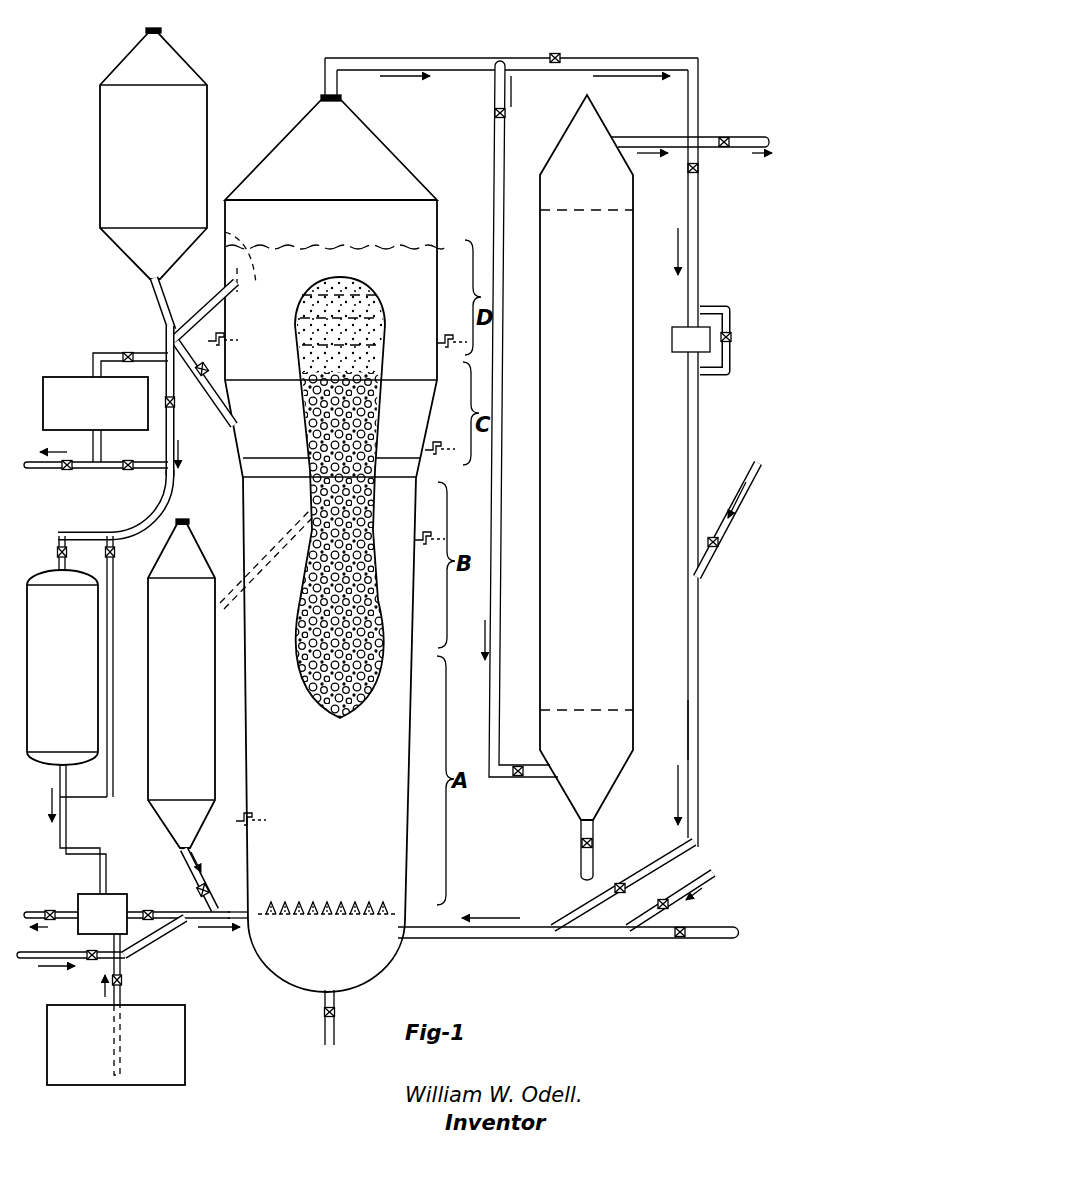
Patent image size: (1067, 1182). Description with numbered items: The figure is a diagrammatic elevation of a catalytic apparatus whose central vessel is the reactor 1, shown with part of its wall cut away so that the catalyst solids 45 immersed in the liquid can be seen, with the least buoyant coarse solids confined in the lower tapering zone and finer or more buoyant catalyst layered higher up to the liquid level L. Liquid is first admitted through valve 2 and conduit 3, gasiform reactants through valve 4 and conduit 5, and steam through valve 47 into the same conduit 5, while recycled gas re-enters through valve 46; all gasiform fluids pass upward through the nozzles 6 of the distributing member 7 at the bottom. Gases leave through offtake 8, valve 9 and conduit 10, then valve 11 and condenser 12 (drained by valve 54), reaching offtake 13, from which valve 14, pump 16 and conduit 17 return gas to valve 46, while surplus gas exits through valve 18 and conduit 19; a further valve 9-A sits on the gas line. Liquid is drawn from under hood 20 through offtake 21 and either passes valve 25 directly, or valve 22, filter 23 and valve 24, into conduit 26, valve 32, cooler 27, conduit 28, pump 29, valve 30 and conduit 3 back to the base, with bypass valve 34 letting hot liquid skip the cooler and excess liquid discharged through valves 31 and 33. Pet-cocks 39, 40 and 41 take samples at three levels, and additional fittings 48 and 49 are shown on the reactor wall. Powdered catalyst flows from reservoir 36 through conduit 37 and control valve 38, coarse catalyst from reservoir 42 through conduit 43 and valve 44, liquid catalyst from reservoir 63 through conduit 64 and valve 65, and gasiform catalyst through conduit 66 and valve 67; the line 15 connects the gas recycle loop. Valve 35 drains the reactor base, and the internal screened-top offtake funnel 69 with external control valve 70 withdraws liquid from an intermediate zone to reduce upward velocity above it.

The reactor 1 is at (402, 838).
The valve 2 is at (90, 960).
The conduit 3 is at (246, 922).
The valve 4 is at (685, 938).
The conduit 5 is at (462, 940).
The nozzles 6 is at (380, 900).
The distributing member 7 is at (386, 913).
The offtake 8 is at (392, 58).
The valve 9 is at (495, 113).
The valve 9-A is at (556, 55).
The conduit 10 is at (495, 214).
The valve 11 is at (517, 766).
The condenser 12 is at (565, 780).
The offtake 13 is at (656, 137).
The valve 14 is at (688, 170).
The pipe 15 is at (698, 250).
The pump 16 is at (680, 352).
The conduit 17 is at (688, 729).
The valve 18 is at (724, 137).
The conduit 19 is at (752, 153).
The hood 20 is at (226, 262).
The offtake 21 is at (212, 305).
The valve 22 is at (130, 353).
The filter 23 is at (55, 375).
The valve 24 is at (128, 470).
The valve 25 is at (176, 405).
The conduit 26 is at (176, 489).
The cooler 27 is at (38, 572).
The conduit 28 is at (67, 820).
The pump 29 is at (84, 896).
The valve 30 is at (146, 910).
The valve 31 is at (50, 910).
The valve 32 is at (56, 553).
The valve 33 is at (68, 470).
The bypass valve 34 is at (115, 552).
The valve 35 is at (325, 1012).
The reservoir 36 is at (158, 812).
The conduit 37 is at (183, 866).
The control valve 38 is at (209, 890).
The pet-cock 39 is at (430, 552).
The pet-cock 40 is at (440, 435).
The pet-cock 41 is at (448, 334).
The coarse catalyst reservoir 42 is at (125, 60).
The conduit 43 is at (160, 296).
The valve 44 is at (205, 380).
The solids 45 is at (343, 530).
The valve 46 is at (625, 882).
The valve 47 is at (680, 906).
The nozzle 48 is at (243, 813).
The nozzle 49 is at (216, 335).
The valve 54 is at (594, 845).
The reservoir 63 is at (176, 1024).
The conduit 64 is at (122, 991).
The valve 65 is at (122, 977).
The conduit 66 is at (742, 488).
The valve 67 is at (718, 546).
The screened-top offtake funnel 69 is at (243, 458).
The control valve 70 is at (242, 580).
The liquid level L is at (360, 247).